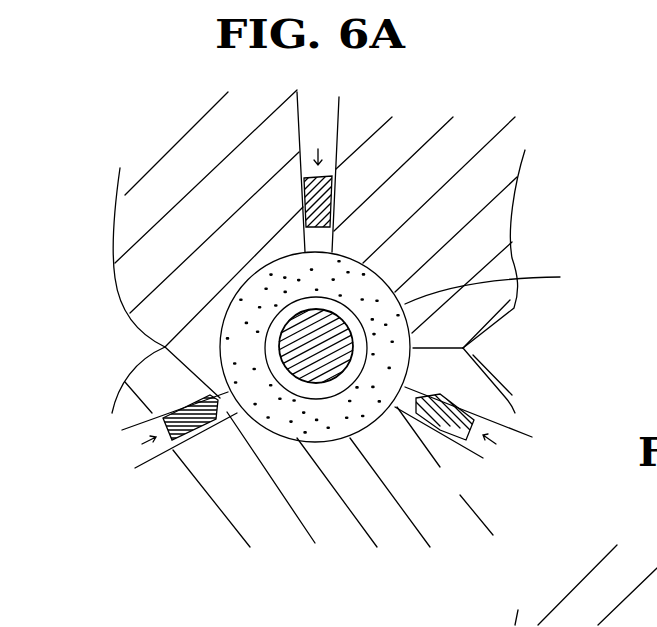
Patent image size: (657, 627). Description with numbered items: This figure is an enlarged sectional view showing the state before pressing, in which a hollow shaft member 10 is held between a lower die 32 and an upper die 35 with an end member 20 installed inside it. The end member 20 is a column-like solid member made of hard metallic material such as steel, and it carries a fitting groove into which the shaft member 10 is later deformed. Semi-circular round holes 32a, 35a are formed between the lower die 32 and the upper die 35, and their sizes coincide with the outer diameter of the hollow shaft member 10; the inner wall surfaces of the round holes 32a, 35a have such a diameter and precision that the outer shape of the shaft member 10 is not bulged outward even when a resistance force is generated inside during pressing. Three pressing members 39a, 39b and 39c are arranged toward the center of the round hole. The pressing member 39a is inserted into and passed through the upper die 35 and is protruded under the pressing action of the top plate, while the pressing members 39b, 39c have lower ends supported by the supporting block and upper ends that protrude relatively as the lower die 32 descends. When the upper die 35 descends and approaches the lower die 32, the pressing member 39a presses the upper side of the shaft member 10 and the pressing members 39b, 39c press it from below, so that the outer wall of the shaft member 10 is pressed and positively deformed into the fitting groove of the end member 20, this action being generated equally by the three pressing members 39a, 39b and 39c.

The hollow shaft member 10 is at (273, 430).
The end member 20 is at (287, 344).
The lower die 32 is at (502, 403).
The semi-circular round hole 32a is at (463, 348).
The upper die 35 is at (495, 201).
The semi-circular round hole 35a is at (514, 280).
The pressing member 39a is at (303, 177).
The pressing member 39b is at (462, 442).
The pressing member 39c is at (171, 450).